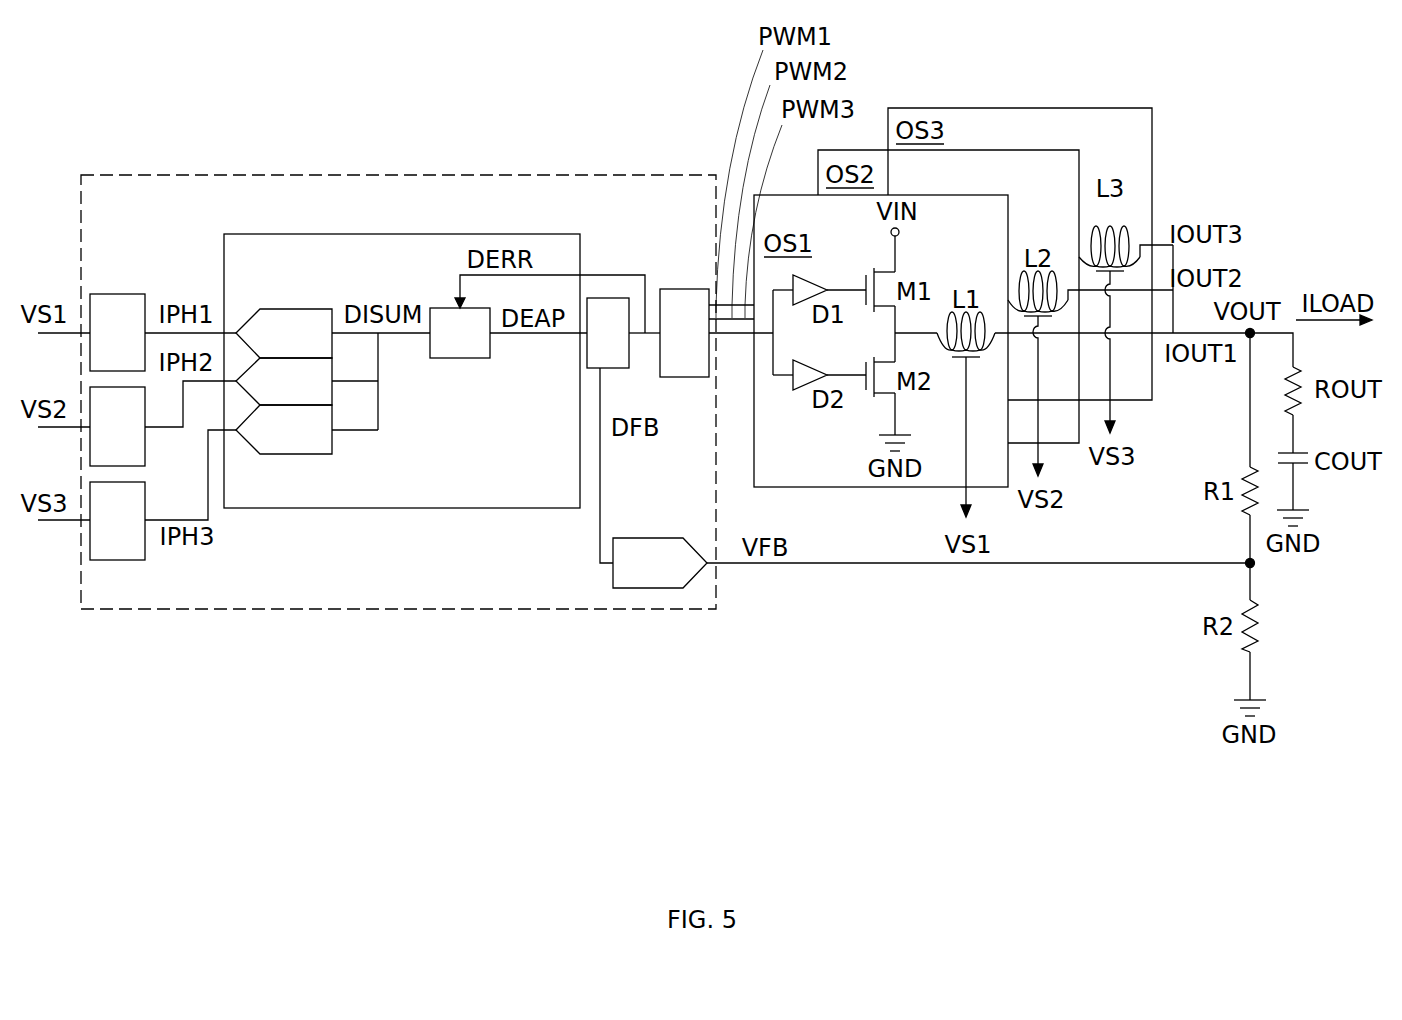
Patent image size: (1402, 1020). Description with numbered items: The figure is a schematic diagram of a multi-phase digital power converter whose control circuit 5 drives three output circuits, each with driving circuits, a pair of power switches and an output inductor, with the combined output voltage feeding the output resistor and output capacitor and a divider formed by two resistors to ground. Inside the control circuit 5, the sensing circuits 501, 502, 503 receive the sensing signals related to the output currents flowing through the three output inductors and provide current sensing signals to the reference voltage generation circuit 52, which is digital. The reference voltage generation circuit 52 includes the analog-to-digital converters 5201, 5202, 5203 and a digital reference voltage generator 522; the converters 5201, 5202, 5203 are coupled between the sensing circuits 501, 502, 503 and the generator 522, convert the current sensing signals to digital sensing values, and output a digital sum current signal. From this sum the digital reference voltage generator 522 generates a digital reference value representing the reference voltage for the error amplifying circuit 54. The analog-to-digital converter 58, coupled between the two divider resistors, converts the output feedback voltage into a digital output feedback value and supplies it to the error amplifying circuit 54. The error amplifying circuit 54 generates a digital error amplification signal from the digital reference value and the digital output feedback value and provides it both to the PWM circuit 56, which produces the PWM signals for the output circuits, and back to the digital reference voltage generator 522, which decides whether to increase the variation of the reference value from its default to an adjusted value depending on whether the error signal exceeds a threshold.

The control circuit 5 is at (709, 210).
The reference voltage generation circuit 52 is at (236, 270).
The error amplifying circuit 54 is at (595, 345).
The PWM circuit 56 is at (671, 345).
The analog-to-digital converter 58 is at (637, 576).
The sensing circuit 501 is at (135, 346).
The sensing circuit 502 is at (135, 440).
The sensing circuit 503 is at (135, 534).
The analog-to-digital converter 5201 is at (271, 346).
The analog-to-digital converter 5202 is at (271, 394).
The analog-to-digital converter 5203 is at (271, 443).
The digital reference voltage generator 522 is at (478, 346).